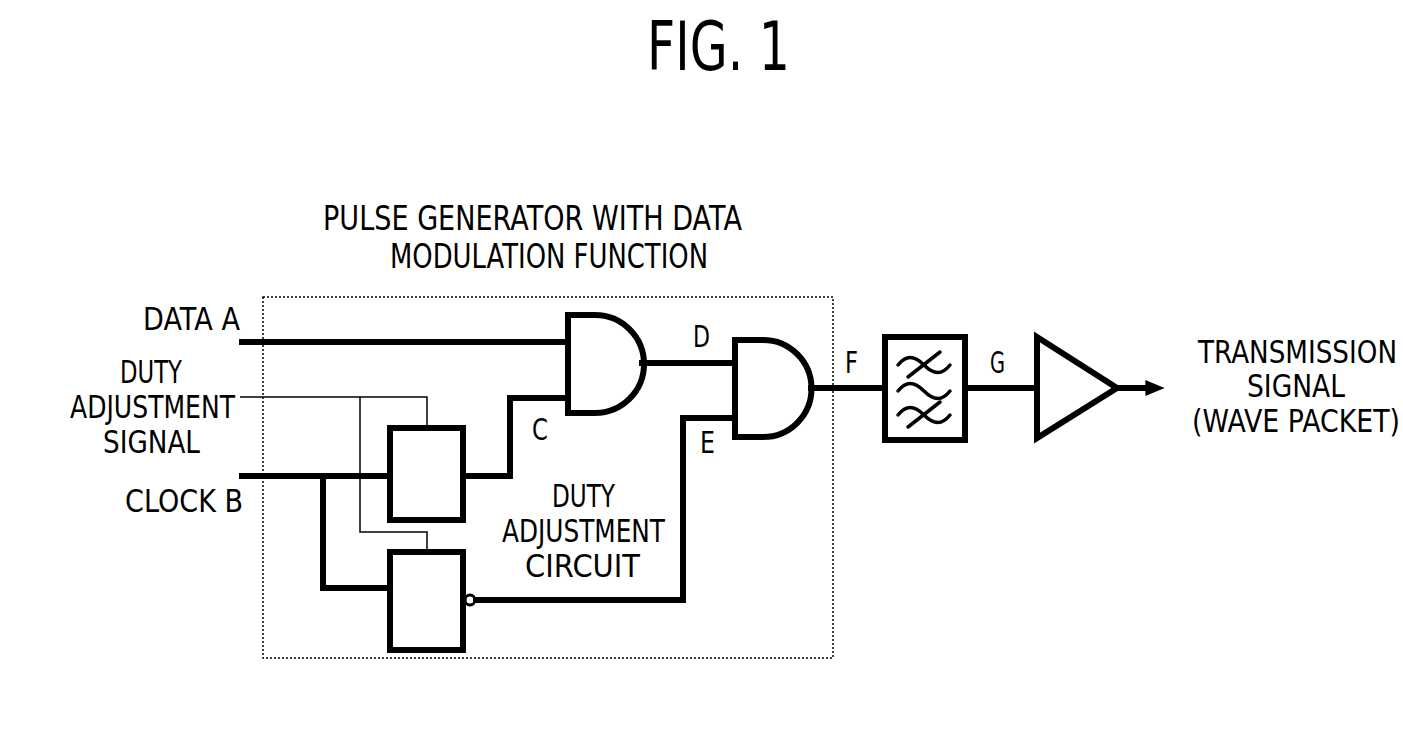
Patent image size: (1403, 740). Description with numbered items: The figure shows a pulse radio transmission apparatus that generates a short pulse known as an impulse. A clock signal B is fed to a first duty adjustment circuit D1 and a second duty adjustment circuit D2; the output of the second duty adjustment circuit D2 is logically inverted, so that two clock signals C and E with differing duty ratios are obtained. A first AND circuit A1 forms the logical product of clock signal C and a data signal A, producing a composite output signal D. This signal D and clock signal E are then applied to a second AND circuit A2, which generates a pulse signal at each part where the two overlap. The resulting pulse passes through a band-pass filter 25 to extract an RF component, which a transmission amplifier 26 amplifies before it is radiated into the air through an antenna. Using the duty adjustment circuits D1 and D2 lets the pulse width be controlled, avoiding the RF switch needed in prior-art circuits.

The band-pass filter 25 is at (927, 440).
The transmission amplifier 26 is at (1080, 413).
The first AND circuit A1 is at (606, 364).
The second AND circuit A2 is at (773, 388).
The first duty adjustment circuit D1 is at (426, 474).
The second duty adjustment circuit D2 is at (432, 601).